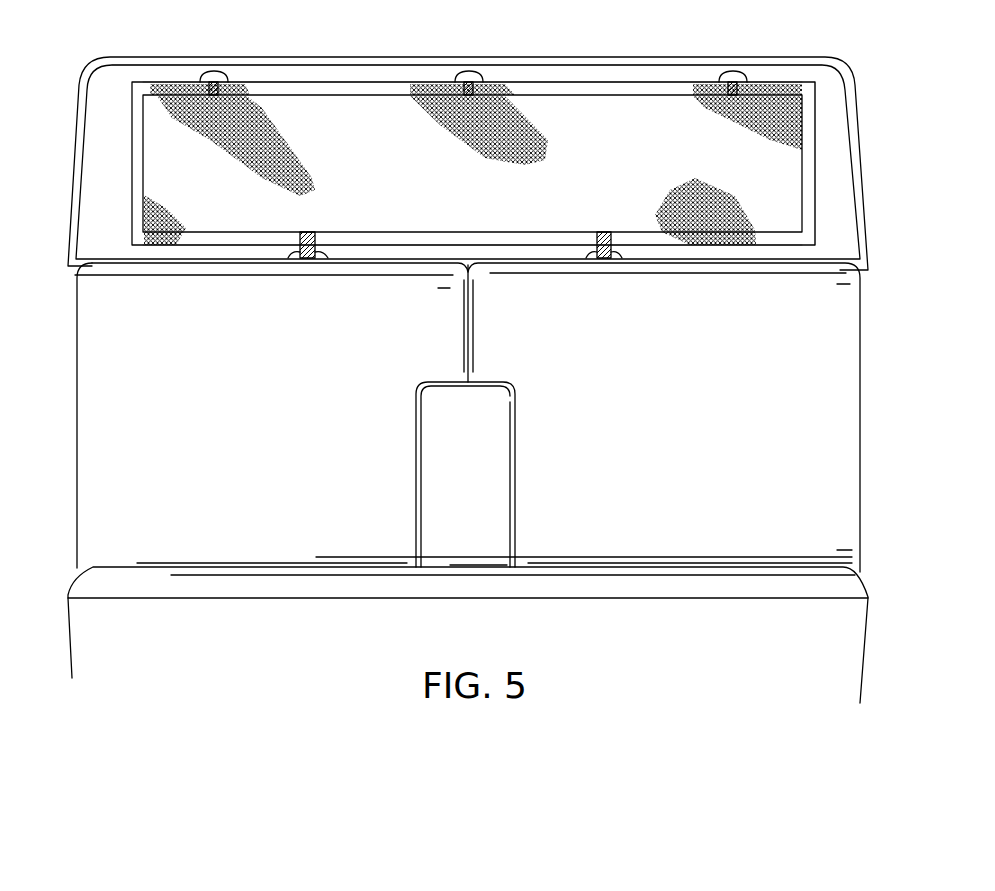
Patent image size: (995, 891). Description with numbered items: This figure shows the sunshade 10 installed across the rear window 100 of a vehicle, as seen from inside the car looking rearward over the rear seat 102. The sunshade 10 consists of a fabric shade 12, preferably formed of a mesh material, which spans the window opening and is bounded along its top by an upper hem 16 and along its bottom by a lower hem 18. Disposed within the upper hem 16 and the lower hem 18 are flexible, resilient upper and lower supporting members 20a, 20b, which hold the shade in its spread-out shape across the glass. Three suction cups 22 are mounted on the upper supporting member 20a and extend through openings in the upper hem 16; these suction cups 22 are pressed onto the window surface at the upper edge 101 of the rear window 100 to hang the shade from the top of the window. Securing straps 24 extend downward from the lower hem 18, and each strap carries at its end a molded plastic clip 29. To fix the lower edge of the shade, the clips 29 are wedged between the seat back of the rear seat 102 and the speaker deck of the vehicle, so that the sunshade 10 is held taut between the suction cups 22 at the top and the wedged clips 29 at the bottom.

The sunshade 10 is at (826, 134).
The fabric shade 12 is at (391, 177).
The upper hem 16 is at (600, 82).
The lower hem 18 is at (646, 246).
The upper supporting member 20a is at (360, 88).
The lower supporting member 20b is at (452, 232).
The suction cup 22 is at (214, 70).
The securing strap 24 is at (290, 252).
The clip 29 is at (322, 256).
The rear window 100 is at (93, 180).
The upper edge 101 is at (755, 76).
The rear seat 102 is at (77, 428).